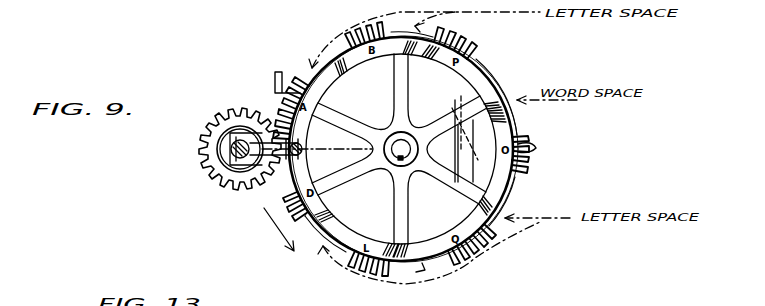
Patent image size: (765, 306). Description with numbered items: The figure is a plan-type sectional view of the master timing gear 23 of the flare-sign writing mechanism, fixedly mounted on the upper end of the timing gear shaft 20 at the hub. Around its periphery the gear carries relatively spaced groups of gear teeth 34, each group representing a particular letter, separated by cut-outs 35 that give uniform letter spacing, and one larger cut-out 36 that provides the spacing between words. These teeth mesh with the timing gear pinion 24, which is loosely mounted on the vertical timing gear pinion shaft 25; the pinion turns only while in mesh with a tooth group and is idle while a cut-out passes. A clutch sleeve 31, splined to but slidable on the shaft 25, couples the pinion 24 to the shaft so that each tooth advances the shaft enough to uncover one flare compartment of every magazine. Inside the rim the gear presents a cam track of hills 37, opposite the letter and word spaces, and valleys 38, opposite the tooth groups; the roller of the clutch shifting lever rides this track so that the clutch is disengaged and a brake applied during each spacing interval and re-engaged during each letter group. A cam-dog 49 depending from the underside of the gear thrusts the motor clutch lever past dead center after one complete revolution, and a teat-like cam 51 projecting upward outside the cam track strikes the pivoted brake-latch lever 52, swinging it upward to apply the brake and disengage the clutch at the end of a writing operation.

The timing gear shaft 20 is at (403, 142).
The master timing gear 23 is at (486, 92).
The timing gear pinion 24 is at (217, 177).
The timing gear pinion shaft 25 is at (228, 157).
The clutch sleeve 31 is at (236, 147).
The gear teeth 34 is at (468, 46).
The cut-outs 35 is at (318, 238).
The larger cut-out 36 is at (508, 98).
The hills 37 is at (403, 47).
The valleys 38 is at (313, 178).
The cam-dog 49 is at (530, 147).
The cam 51 is at (306, 142).
The brake-latch lever 52 is at (276, 92).